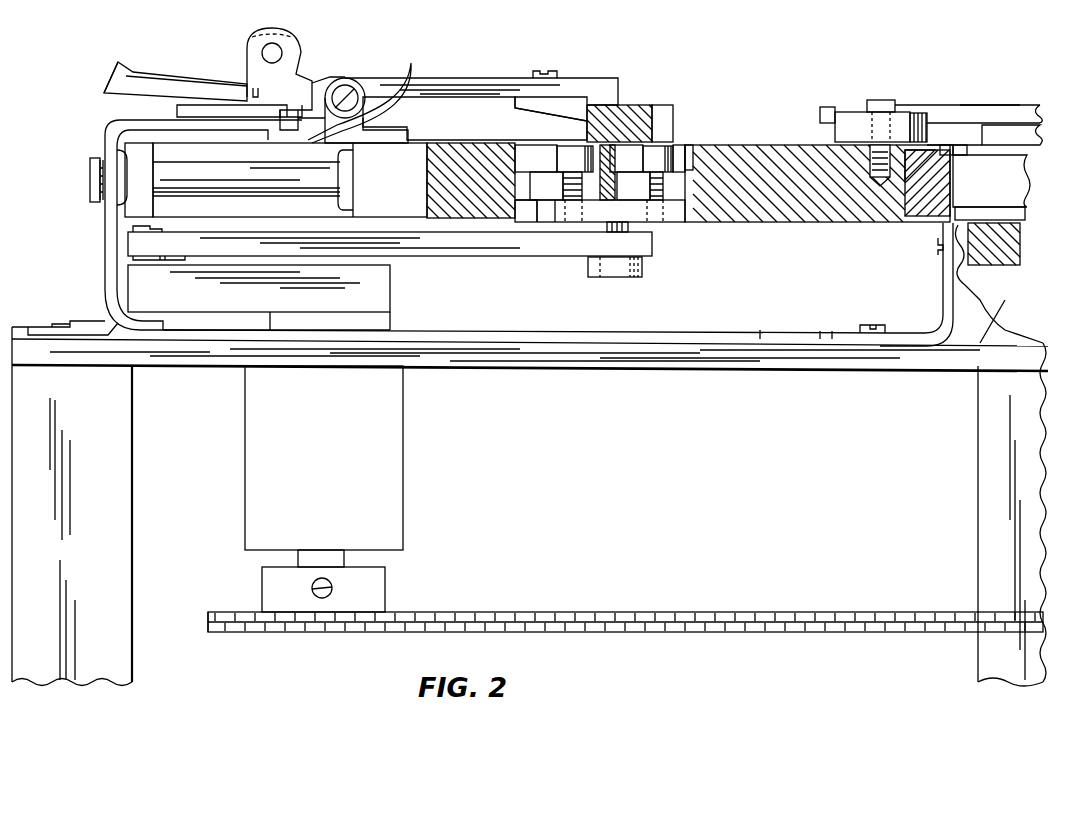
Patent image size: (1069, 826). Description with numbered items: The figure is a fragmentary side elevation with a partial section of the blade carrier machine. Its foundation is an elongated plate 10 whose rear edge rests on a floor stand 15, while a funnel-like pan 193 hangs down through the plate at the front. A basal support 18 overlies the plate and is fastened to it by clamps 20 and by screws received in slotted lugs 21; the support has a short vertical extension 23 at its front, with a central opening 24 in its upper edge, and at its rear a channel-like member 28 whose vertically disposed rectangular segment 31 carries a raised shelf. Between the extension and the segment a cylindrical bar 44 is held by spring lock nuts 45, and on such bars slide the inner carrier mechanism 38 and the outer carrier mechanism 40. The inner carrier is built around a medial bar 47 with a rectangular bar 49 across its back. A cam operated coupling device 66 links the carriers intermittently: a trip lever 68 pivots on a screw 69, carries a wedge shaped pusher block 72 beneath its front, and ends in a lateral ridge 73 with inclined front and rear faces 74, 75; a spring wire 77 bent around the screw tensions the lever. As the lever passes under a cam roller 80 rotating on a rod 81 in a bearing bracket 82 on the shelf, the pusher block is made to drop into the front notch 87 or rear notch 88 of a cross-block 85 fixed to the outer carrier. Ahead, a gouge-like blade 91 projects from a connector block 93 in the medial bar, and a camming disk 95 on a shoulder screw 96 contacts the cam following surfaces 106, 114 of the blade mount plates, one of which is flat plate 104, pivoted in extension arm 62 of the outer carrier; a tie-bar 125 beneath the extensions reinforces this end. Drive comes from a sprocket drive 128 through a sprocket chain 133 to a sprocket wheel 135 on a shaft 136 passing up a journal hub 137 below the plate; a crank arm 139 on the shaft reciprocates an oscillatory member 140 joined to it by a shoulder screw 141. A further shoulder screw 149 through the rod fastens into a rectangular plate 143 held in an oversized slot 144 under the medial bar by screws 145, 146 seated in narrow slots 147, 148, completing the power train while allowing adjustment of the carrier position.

The elongated plate 10 is at (617, 357).
The floor stand 15 is at (107, 458).
The basal support 18 is at (764, 331).
The clamps 20 is at (92, 322).
The slotted lugs 21 is at (893, 331).
The vertical extension 23 is at (948, 285).
The central opening 24 is at (948, 225).
The channel-like member 28 is at (108, 136).
The rectangular segment 31 is at (105, 250).
The inner carrier mechanism 38 is at (766, 138).
The outer carrier mechanism 40 is at (962, 139).
The cylindrical bar 44 is at (227, 188).
The spring lock nuts 45 is at (95, 193).
The medial bar 47 is at (768, 212).
The rectangular bar 49 is at (143, 175).
The extension arm 62 is at (1025, 214).
The cam operated coupling device 66 is at (533, 73).
The trip lever 68 is at (475, 80).
The screw 69 is at (345, 78).
The pusher block 72 is at (530, 102).
The lateral ridge 73 is at (106, 93).
The front face 74 is at (128, 77).
The rear face 75 is at (115, 68).
The spring wire 77 is at (362, 92).
The cam roller 80 is at (296, 38).
The rod 81 is at (262, 53).
The bearing bracket 82 is at (180, 110).
The cross-block 85 is at (625, 110).
The front notch 87 is at (673, 108).
The rear notch 88 is at (587, 112).
The gouge-like blade 91 is at (1010, 178).
The connector block 93 is at (910, 216).
The camming disk 95 is at (850, 118).
The shoulder screw 96 is at (878, 100).
The flat plate 104 is at (985, 105).
The cam following surface 106 is at (938, 113).
The cam following surface 114 is at (1027, 128).
The tie-bar 125 is at (1000, 255).
The sprocket drive 128 is at (551, 611).
The sprocket chain 133 is at (690, 612).
The sprocket wheel 135 is at (378, 588).
The shaft 136 is at (331, 556).
The journal hub 137 is at (390, 440).
The crank arm 139 is at (232, 299).
The oscillatory member 140 is at (433, 243).
The shoulder screw 141 is at (172, 228).
The rectangular plate 143 is at (600, 211).
The oversized slot 144 is at (527, 223).
The screw 145 is at (558, 147).
The screw 146 is at (678, 147).
The narrow slot 147 is at (553, 170).
The narrow slot 148 is at (637, 170).
The shoulder screw 149 is at (642, 267).
The funnel-like pan 193 is at (990, 453).